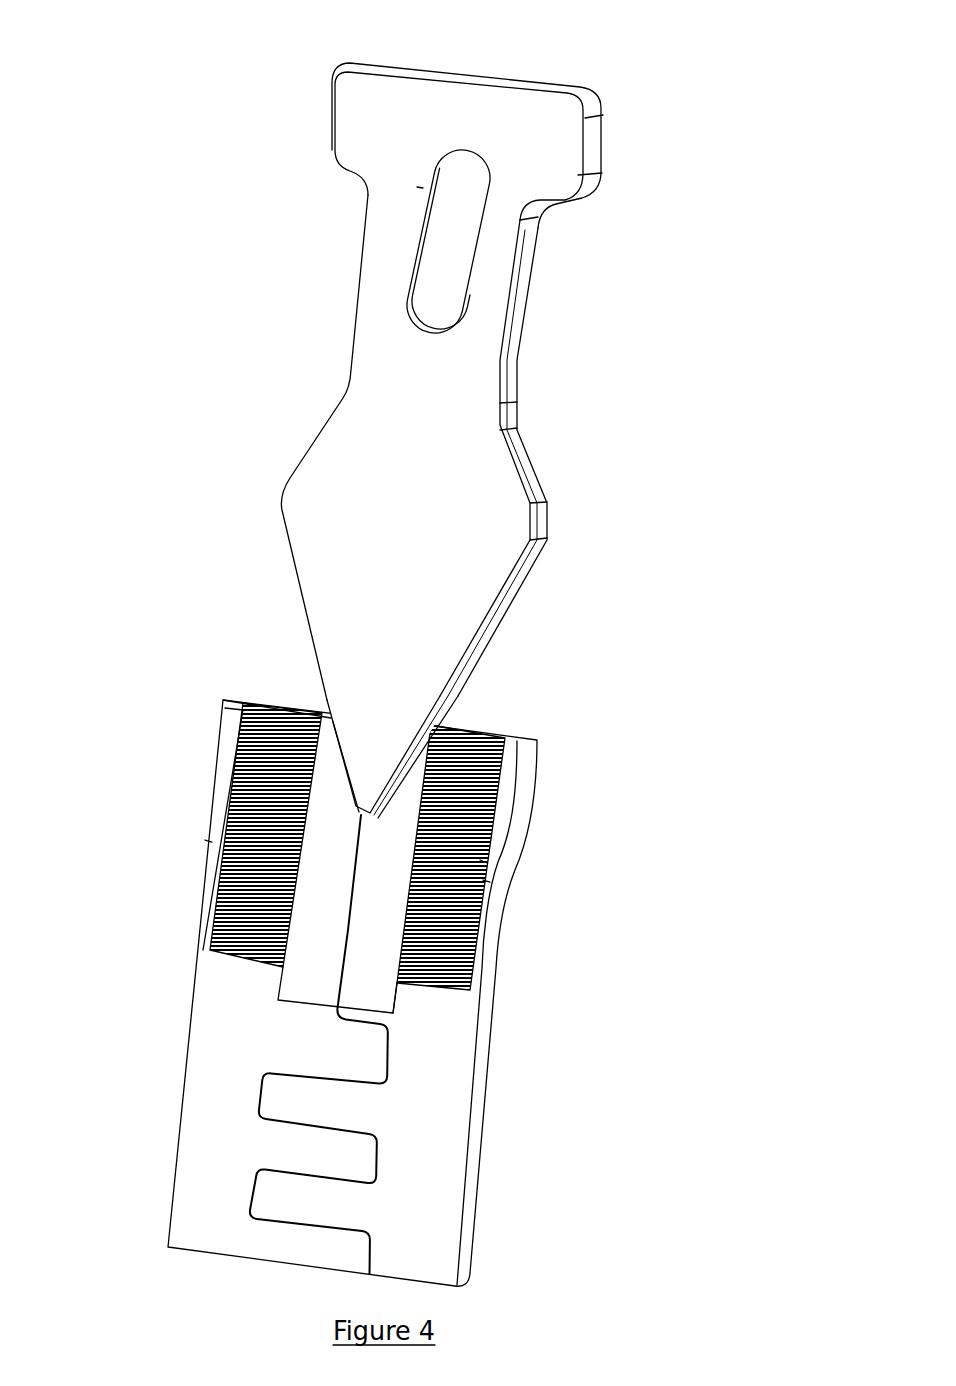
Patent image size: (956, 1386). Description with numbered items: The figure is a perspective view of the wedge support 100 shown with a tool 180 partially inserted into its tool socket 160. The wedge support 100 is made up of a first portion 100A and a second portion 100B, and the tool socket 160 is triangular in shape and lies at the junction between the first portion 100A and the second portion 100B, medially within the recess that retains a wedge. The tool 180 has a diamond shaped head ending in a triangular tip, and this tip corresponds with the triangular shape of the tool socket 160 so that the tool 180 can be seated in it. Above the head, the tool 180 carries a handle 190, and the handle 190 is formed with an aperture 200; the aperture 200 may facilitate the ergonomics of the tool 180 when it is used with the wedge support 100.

The wedge support 100 is at (132, 706).
The first portion 100A is at (235, 1040).
The second portion 100B is at (452, 1053).
The tool socket 160 is at (371, 827).
The tool 180 is at (520, 392).
The handle 190 is at (602, 98).
The aperture 200 is at (463, 150).